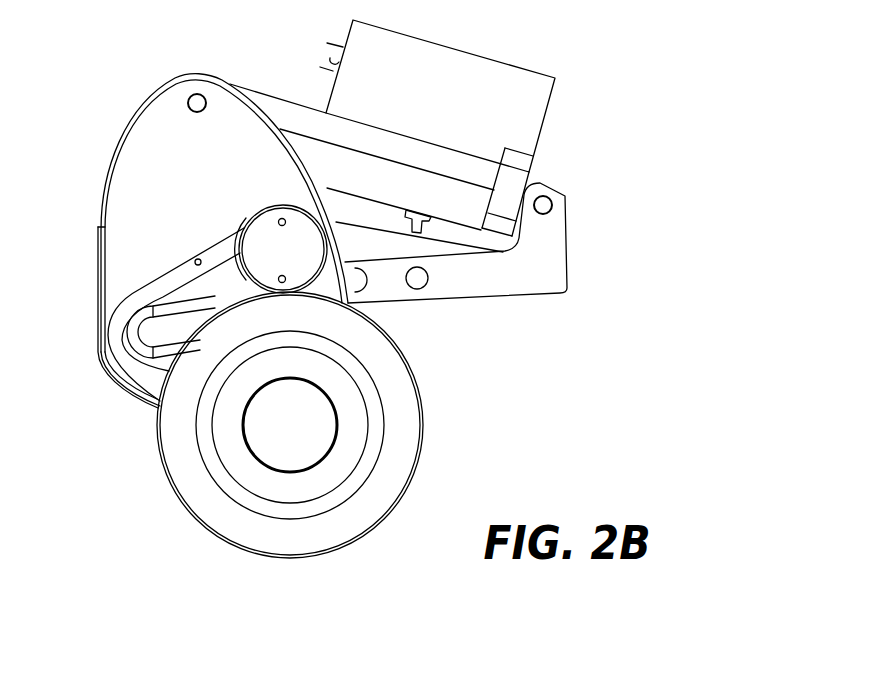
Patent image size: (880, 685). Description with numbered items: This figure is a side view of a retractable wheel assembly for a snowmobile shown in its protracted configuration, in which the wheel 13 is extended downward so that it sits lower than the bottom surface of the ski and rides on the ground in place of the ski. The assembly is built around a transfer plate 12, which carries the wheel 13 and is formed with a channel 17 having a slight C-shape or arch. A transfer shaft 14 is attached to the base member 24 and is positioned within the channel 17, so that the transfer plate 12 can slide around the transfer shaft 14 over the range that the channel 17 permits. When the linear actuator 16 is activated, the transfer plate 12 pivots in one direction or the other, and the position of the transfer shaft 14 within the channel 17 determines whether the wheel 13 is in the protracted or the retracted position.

The transfer plate 12 is at (177, 199).
The wheel 13 is at (352, 333).
The transfer shaft 14 is at (294, 260).
The linear actuator 16 is at (446, 99).
The channel 17 is at (167, 327).
The base member 24 is at (475, 287).